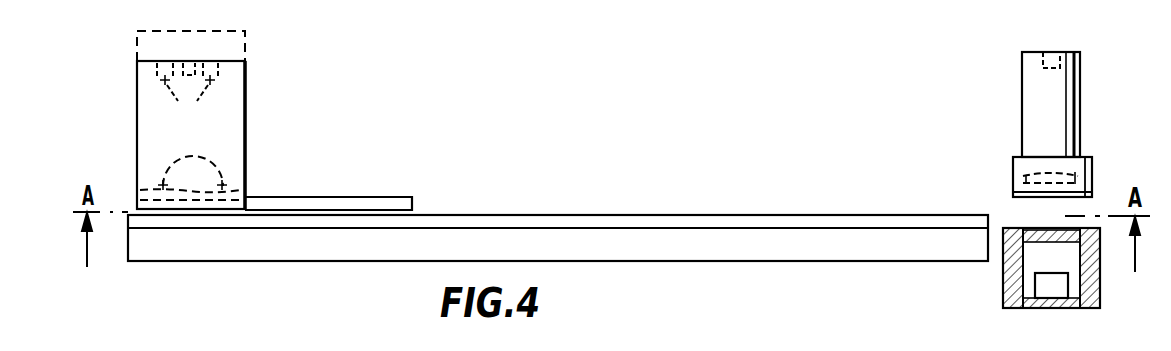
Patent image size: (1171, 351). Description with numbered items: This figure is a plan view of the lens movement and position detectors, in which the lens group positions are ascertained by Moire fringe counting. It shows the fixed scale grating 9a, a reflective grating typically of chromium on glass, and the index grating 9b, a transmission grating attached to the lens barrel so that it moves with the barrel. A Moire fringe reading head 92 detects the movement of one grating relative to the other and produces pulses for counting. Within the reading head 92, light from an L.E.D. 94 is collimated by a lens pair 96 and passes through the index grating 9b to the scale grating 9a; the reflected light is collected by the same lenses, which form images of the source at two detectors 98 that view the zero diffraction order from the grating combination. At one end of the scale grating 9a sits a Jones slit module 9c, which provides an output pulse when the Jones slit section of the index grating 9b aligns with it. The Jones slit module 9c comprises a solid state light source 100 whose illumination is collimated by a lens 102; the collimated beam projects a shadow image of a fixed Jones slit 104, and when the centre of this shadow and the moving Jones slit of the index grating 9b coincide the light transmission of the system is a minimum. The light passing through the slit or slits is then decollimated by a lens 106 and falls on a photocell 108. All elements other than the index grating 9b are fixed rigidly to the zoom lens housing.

The fixed scale grating 9a is at (517, 214).
The index grating 9b is at (323, 200).
The Jones slit module 9c is at (1086, 156).
The Moire fringe reading head 92 is at (246, 116).
The L.E.D. 94 is at (192, 64).
The lens pair 96 is at (190, 171).
The detectors 98 is at (187, 95).
The solid state light source 100 is at (1040, 60).
The lens 102 is at (1021, 173).
The fixed Jones slit 104 is at (1013, 195).
The lens 106 is at (1040, 243).
The photocell 108 is at (1055, 292).